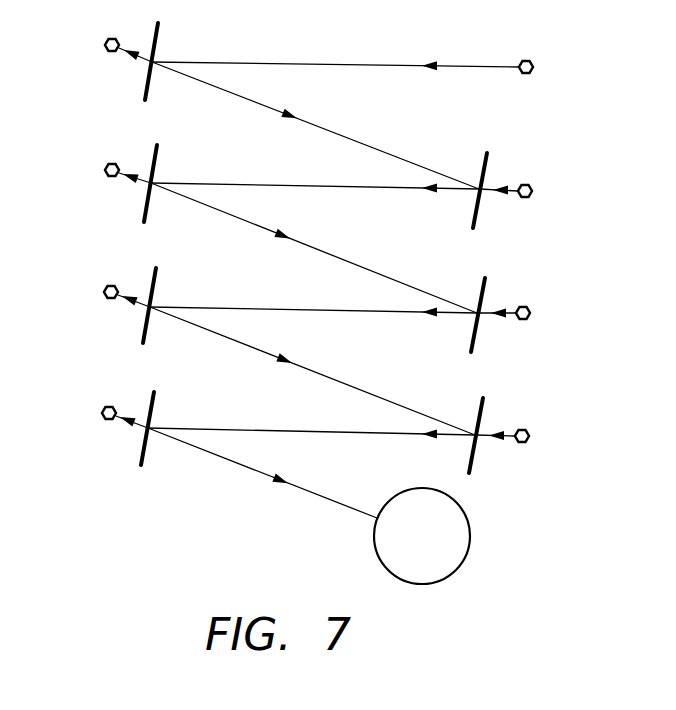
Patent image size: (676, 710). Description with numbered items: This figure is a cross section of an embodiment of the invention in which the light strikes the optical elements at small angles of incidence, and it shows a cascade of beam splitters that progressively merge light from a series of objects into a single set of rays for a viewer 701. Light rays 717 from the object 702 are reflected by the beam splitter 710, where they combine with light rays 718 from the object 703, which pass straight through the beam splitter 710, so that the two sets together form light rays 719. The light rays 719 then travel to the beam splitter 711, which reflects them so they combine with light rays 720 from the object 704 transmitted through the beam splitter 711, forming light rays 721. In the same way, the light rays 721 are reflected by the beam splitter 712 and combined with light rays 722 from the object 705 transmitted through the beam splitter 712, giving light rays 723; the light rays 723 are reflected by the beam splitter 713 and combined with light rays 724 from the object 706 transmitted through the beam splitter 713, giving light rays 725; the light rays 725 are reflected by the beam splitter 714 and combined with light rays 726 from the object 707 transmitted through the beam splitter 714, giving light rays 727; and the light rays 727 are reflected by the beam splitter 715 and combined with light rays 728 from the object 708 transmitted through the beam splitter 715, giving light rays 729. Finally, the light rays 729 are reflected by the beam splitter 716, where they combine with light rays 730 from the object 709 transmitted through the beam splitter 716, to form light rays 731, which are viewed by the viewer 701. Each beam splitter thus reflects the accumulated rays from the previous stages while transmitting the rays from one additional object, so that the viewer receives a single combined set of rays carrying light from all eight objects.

The viewer 701 is at (470, 522).
The object 702 is at (536, 64).
The object 703 is at (108, 40).
The object 704 is at (535, 190).
The object 705 is at (106, 163).
The object 706 is at (534, 313).
The object 707 is at (104, 287).
The object 708 is at (527, 430).
The object 709 is at (102, 408).
The beam splitter 710 is at (160, 34).
The beam splitter 711 is at (484, 160).
The beam splitter 712 is at (159, 157).
The beam splitter 713 is at (481, 287).
The beam splitter 714 is at (158, 282).
The beam splitter 715 is at (480, 407).
The beam splitter 716 is at (155, 404).
The light rays 717 is at (354, 62).
The light rays 718 is at (134, 57).
The light rays 719 is at (353, 137).
The light rays 720 is at (497, 196).
The light rays 721 is at (339, 183).
The light rays 722 is at (133, 182).
The light rays 723 is at (356, 264).
The light rays 724 is at (496, 318).
The light rays 725 is at (312, 307).
The light rays 726 is at (132, 303).
The light rays 727 is at (357, 387).
The light rays 728 is at (494, 436).
The light rays 729 is at (312, 430).
The light rays 730 is at (128, 425).
The light rays 731 is at (318, 496).